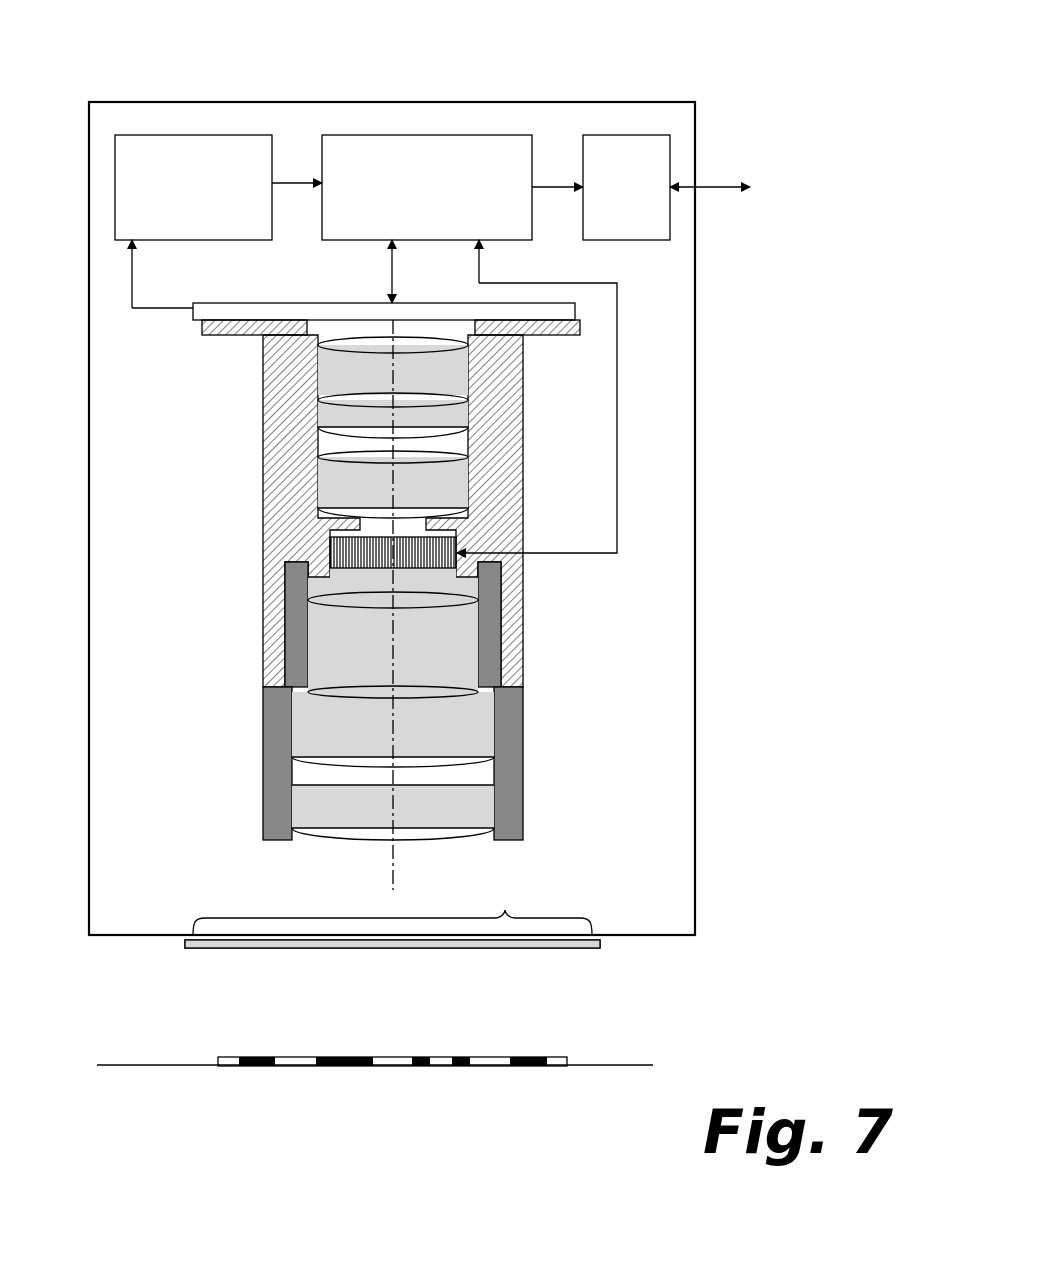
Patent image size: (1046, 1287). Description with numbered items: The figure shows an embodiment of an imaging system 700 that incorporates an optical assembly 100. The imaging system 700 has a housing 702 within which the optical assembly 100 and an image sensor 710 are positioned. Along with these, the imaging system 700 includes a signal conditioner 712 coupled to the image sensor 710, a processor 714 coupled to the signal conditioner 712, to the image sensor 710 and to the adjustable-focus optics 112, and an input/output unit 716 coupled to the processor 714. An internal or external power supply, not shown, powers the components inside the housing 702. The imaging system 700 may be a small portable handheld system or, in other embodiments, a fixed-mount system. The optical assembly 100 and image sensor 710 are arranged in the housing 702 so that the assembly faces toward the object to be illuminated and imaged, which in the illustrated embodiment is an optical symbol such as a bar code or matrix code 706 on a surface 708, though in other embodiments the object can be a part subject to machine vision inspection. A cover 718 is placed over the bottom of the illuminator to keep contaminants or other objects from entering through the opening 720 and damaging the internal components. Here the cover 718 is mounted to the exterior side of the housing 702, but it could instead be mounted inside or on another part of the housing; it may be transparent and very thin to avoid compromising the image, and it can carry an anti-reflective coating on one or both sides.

The imaging system 700 is at (737, 73).
The housing 702 is at (688, 465).
The bar code or matrix code 706 is at (502, 1062).
The surface 708 is at (193, 1066).
The image sensor 710 is at (242, 310).
The signal conditioner 712 is at (193, 187).
The processor 714 is at (427, 187).
The input/output unit 716 is at (626, 187).
The cover 718 is at (582, 944).
The opening 720 is at (392, 905).
The optical assembly 100 is at (371, 625).
The adjustable-focus optics 112 is at (330, 540).